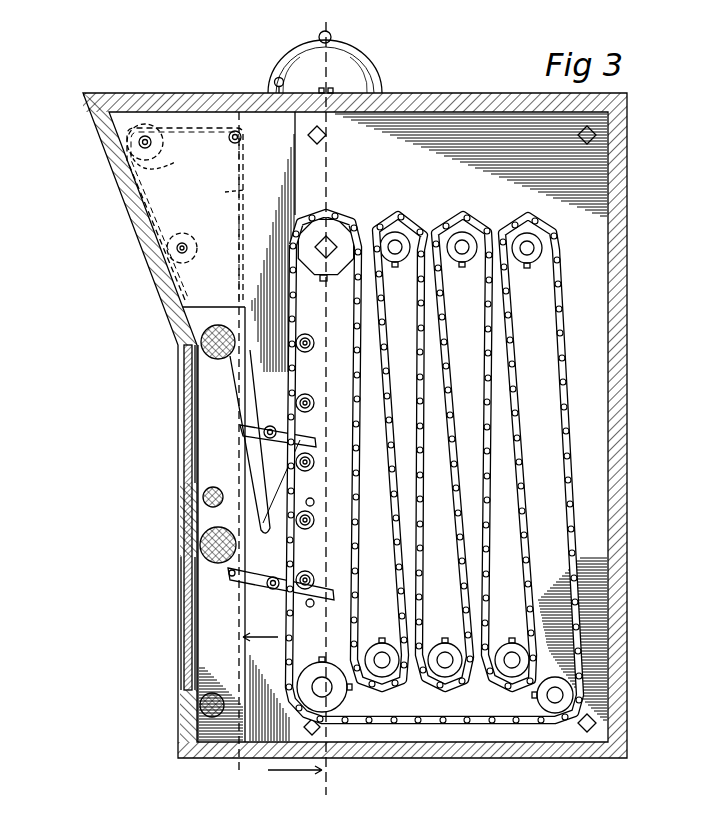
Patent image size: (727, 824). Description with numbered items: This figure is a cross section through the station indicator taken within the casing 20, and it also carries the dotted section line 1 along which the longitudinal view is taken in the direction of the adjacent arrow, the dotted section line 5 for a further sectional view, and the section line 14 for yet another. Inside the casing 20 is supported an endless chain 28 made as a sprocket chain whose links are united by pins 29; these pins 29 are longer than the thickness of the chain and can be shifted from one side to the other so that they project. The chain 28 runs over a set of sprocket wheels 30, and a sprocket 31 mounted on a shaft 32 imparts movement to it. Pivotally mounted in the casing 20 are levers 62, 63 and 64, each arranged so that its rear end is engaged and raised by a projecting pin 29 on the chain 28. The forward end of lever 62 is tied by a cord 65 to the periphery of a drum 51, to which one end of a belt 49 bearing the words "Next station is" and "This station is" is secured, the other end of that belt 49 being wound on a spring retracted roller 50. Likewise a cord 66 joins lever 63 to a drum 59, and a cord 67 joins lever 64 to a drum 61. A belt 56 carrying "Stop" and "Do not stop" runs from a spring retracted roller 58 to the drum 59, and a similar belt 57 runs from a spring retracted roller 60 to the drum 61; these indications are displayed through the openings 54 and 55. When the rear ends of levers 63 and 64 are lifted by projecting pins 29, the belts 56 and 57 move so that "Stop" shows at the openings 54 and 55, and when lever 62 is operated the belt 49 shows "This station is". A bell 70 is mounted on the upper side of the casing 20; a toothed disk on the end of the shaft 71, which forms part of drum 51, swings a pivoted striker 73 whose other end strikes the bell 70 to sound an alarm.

The dotted section line 1 is at (319, 408).
The dotted section line 5 is at (122, 88).
The section line 14 is at (240, 268).
The casing 20 is at (627, 150).
The endless chain 28 is at (555, 360).
The pins 29 is at (312, 405).
The sprocket wheels 30 is at (443, 233).
The sprocket 31 is at (347, 218).
The shaft 32 is at (327, 214).
The belt 49 is at (170, 214).
The spring retracted roller 50 is at (192, 238).
The drum 51 is at (155, 148).
The opening 54 is at (183, 470).
The opening 55 is at (183, 658).
The belt 56 is at (200, 420).
The belt 57 is at (200, 622).
The spring retracted roller 58 is at (207, 507).
The drum 59 is at (198, 351).
The spring retracted roller 60 is at (178, 718).
The drum 61 is at (207, 537).
The lever 62 is at (300, 435).
The lever 63 is at (300, 462).
The lever 64 is at (257, 573).
The cord 65 is at (221, 196).
The cord 66 is at (247, 455).
The cord 67 is at (232, 563).
The bell 70 is at (360, 60).
The shaft 71 is at (148, 153).
The striker 73 is at (284, 80).